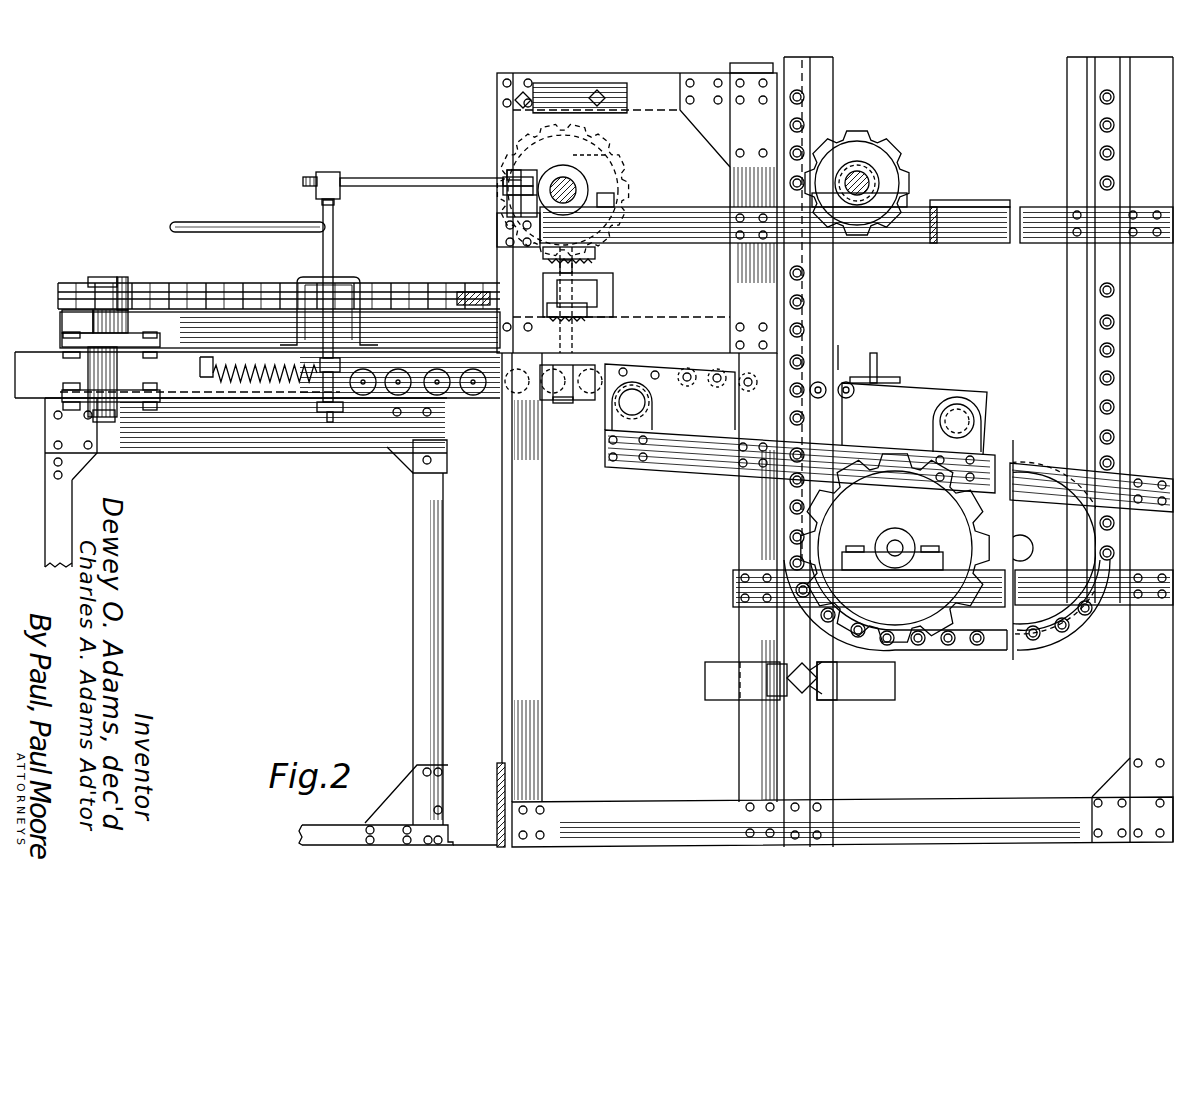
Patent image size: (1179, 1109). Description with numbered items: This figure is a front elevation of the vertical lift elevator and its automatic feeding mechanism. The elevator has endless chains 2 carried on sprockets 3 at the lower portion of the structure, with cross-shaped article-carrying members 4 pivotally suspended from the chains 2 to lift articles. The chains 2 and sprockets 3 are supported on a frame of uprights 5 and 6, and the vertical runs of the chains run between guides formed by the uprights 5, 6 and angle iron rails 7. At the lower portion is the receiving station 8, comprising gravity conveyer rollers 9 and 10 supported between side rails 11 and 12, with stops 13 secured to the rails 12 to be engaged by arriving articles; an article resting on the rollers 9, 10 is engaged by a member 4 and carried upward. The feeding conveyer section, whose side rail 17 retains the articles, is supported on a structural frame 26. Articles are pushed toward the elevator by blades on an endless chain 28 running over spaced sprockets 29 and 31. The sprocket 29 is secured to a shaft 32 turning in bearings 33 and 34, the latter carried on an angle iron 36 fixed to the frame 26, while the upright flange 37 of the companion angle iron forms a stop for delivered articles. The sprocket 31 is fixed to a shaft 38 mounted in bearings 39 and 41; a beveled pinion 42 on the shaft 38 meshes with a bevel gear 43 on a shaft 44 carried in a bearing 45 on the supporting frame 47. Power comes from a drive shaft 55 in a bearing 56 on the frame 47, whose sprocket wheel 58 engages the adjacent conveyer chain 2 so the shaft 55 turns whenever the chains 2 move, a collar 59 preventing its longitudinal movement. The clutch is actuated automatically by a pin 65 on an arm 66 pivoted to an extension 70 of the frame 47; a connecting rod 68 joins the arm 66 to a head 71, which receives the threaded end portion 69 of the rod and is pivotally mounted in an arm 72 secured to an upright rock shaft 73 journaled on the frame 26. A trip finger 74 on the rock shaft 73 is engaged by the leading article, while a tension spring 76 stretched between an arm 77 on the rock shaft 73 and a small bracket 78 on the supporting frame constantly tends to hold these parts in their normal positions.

The endless chain 2 is at (800, 292).
The sprocket 3 is at (927, 645).
The article-carrying member 4 is at (850, 697).
The upright 5 is at (740, 536).
The upright 6 is at (1130, 698).
The angle iron rail 7 is at (828, 312).
The receiving station 8 is at (856, 349).
The gravity conveyer roller 9 is at (690, 385).
The gravity conveyer roller 10 is at (852, 396).
The side rail 11 is at (710, 425).
The side rail 12 is at (940, 392).
The stop 13 is at (880, 365).
The side rail 17 is at (28, 362).
The structural frame 26 is at (402, 602).
The endless chain 28 is at (193, 283).
The sprocket 29 is at (125, 280).
The sprocket 31 is at (600, 273).
The shaft 32 is at (105, 277).
The bearing 33 is at (90, 323).
The bearing 34 is at (90, 373).
The angle iron 36 is at (232, 455).
The upright flange 37 is at (236, 312).
The shaft 38 is at (600, 160).
The bearing 39 is at (622, 127).
The bearing 41 is at (590, 313).
The beveled pinion 42 is at (596, 250).
The bevel gear 43 is at (590, 190).
The shaft 44 is at (572, 186).
The bearing 45 is at (615, 203).
The supporting frame 47 is at (482, 295).
The drive shaft 55 is at (872, 172).
The bearing 56 is at (878, 178).
The sprocket wheel 58 is at (892, 132).
The collar 59 is at (862, 175).
The pin 65 is at (540, 185).
The arm 66 is at (505, 193).
The connecting rod 68 is at (418, 178).
The end portion 69 is at (305, 178).
The extension 70 is at (497, 238).
The head 71 is at (330, 172).
The arm 72 is at (336, 197).
The rock shaft 73 is at (333, 255).
The trip finger 74 is at (228, 222).
The tension spring 76 is at (243, 385).
The arm 77 is at (335, 405).
The bracket 78 is at (205, 385).